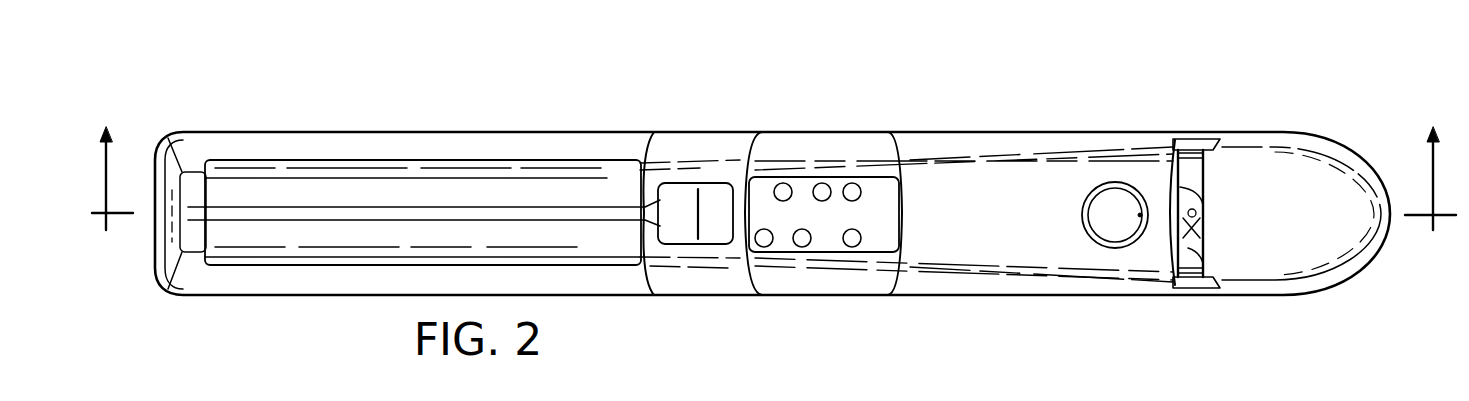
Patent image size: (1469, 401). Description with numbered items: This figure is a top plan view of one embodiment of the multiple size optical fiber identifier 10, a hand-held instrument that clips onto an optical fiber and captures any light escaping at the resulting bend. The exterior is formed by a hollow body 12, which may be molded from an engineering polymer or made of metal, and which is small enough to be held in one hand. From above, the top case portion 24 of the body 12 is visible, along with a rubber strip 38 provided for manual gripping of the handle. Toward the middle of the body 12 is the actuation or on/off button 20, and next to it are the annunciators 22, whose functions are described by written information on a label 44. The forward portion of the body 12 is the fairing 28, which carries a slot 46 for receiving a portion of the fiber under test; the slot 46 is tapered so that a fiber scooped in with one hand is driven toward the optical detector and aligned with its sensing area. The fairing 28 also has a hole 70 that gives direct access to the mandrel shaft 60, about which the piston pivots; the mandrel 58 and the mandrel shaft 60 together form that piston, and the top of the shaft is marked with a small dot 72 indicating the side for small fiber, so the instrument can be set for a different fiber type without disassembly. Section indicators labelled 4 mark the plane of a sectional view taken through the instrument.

The section line 4- 4 is at (779, 178).
The fiber identifier 10 is at (938, 68).
The hollow body 12 is at (852, 128).
The on/off button 20 is at (713, 190).
The annunciators 22 is at (767, 240).
The top case portion 24 is at (404, 148).
The fairing 28 is at (998, 182).
The rubber strip 38 is at (258, 192).
The label 44 is at (883, 230).
The slot 46 is at (1195, 173).
The mandrel 58 is at (1190, 249).
The mandrel shaft 60 is at (1203, 232).
The hole 70 is at (1118, 208).
The small dot 72 is at (1205, 204).